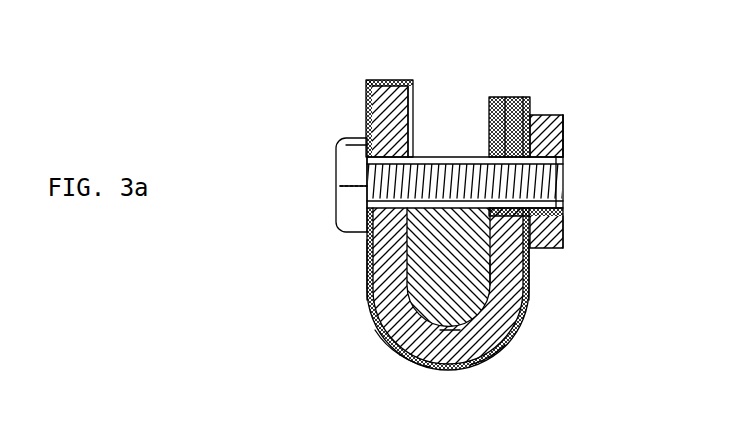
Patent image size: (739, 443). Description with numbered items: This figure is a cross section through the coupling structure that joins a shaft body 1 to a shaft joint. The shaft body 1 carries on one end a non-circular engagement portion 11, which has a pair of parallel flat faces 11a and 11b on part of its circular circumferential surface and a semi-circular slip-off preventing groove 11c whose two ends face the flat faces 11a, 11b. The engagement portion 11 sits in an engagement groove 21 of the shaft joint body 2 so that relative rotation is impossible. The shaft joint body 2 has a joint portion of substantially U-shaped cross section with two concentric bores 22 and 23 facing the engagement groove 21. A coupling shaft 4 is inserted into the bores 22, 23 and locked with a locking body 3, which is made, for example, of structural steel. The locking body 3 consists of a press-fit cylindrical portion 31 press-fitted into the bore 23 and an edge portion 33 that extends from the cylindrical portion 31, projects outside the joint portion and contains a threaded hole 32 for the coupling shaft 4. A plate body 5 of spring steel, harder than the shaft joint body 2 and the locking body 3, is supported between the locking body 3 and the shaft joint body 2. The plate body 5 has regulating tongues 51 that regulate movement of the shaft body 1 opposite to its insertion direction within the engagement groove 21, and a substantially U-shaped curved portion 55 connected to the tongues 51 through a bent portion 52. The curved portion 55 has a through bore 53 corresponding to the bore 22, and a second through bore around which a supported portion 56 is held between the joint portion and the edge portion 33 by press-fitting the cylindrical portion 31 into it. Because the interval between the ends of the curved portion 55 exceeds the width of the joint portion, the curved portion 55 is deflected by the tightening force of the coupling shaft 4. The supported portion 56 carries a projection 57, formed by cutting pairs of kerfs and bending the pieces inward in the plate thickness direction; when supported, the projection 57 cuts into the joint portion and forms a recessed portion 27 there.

The shaft body 1 is at (454, 338).
The shaft joint body 2 is at (386, 348).
The locking body 3 is at (568, 140).
The coupling shaft 4 is at (345, 161).
The plate body 5 is at (500, 362).
The engagement portion 11 is at (368, 249).
The flat face 11a is at (510, 318).
The flat face 11b is at (370, 279).
The slip-off preventing groove 11c is at (533, 278).
The engagement groove 21 is at (372, 306).
The bore 22 is at (357, 168).
The bore 23 is at (491, 105).
The recessed portion 27 is at (516, 97).
The press-fit cylindrical portion 31 is at (505, 97).
The threaded hole 32 is at (566, 175).
The edge portion 33 is at (562, 115).
The regulating tongue 51 is at (411, 150).
The bent portion 52 is at (397, 80).
The through bore 53 is at (345, 196).
The curved portion 55 is at (406, 362).
The supported portion 56 is at (545, 117).
The projection 57 is at (568, 128).